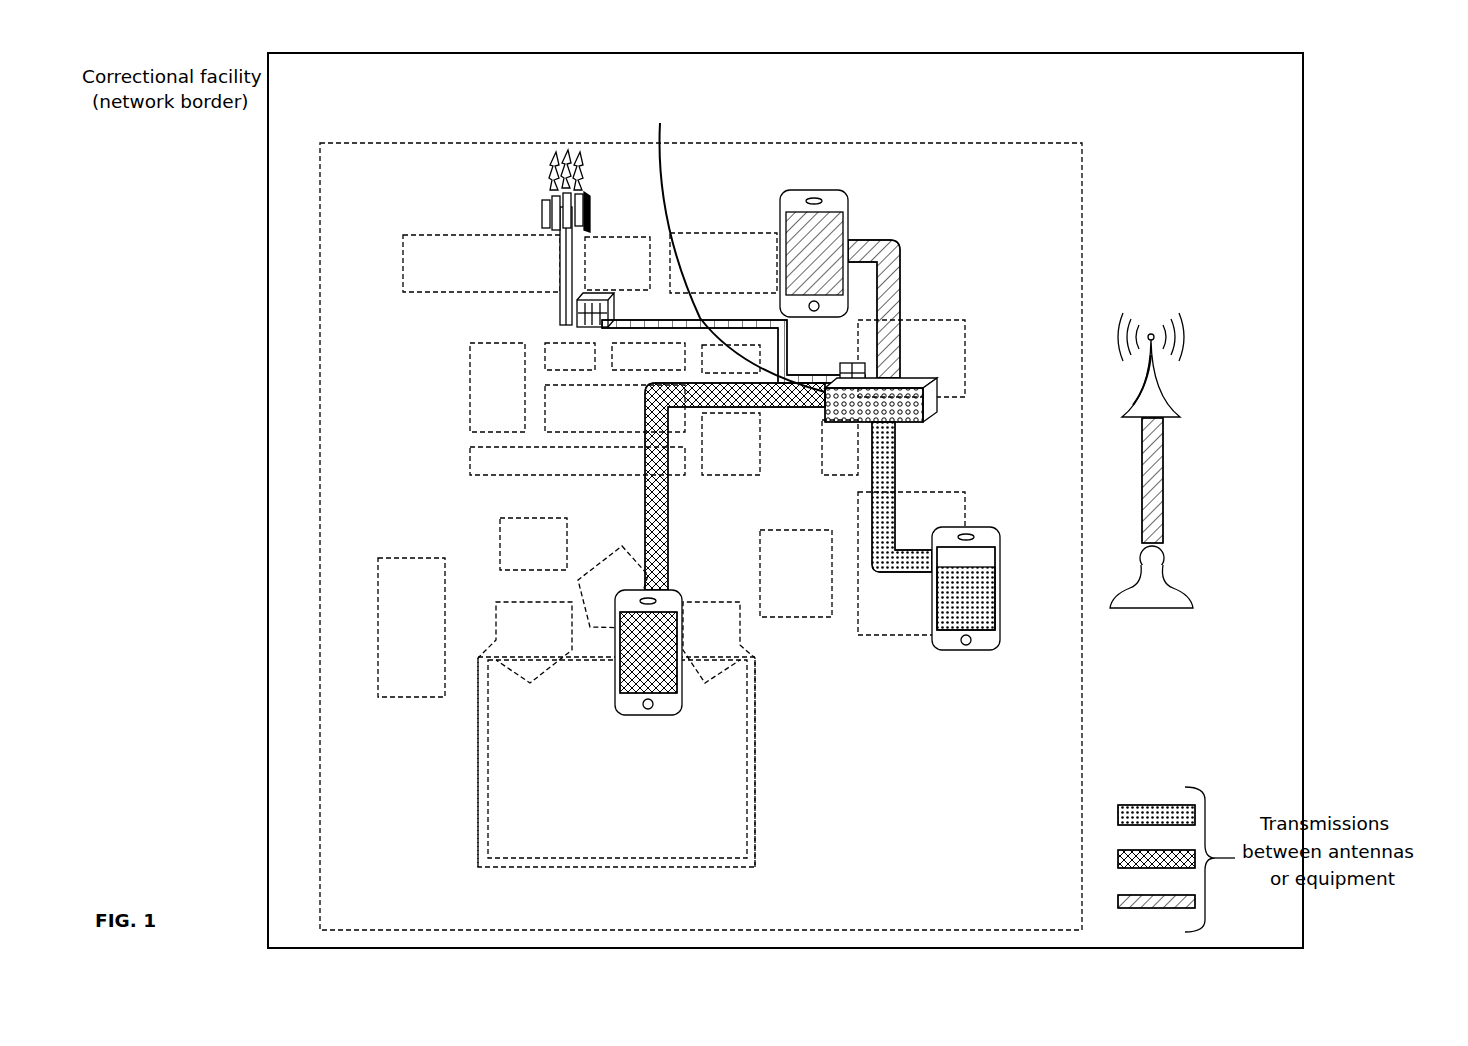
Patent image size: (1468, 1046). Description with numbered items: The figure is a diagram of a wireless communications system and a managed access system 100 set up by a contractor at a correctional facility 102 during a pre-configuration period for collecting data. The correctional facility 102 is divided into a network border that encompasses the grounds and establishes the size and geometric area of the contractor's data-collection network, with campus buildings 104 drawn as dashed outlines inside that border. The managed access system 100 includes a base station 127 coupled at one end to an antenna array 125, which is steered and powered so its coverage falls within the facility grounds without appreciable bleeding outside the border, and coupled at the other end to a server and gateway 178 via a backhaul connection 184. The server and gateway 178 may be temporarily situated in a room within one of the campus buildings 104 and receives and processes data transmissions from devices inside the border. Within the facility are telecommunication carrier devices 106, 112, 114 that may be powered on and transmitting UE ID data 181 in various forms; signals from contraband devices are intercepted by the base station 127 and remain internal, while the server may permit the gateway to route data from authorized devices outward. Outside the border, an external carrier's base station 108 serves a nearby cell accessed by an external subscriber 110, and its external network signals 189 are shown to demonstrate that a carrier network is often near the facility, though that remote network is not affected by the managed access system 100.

The managed access system 100 is at (920, 378).
The correctional facility 102 is at (378, 143).
The campus buildings 104 is at (400, 558).
The telecommunication carrier device 106 is at (975, 652).
The base station 108 is at (1165, 410).
The external subscriber 110 is at (1180, 588).
The telecommunication carrier device 112 is at (655, 717).
The telecommunication carrier device 114 is at (850, 212).
The antenna array 125 is at (548, 222).
The base station 127 is at (578, 330).
The server and gateway 178 is at (698, 246).
The UE ID data 181 is at (908, 287).
The backhaul connection 184 is at (917, 490).
The external network signals 189 is at (1153, 312).